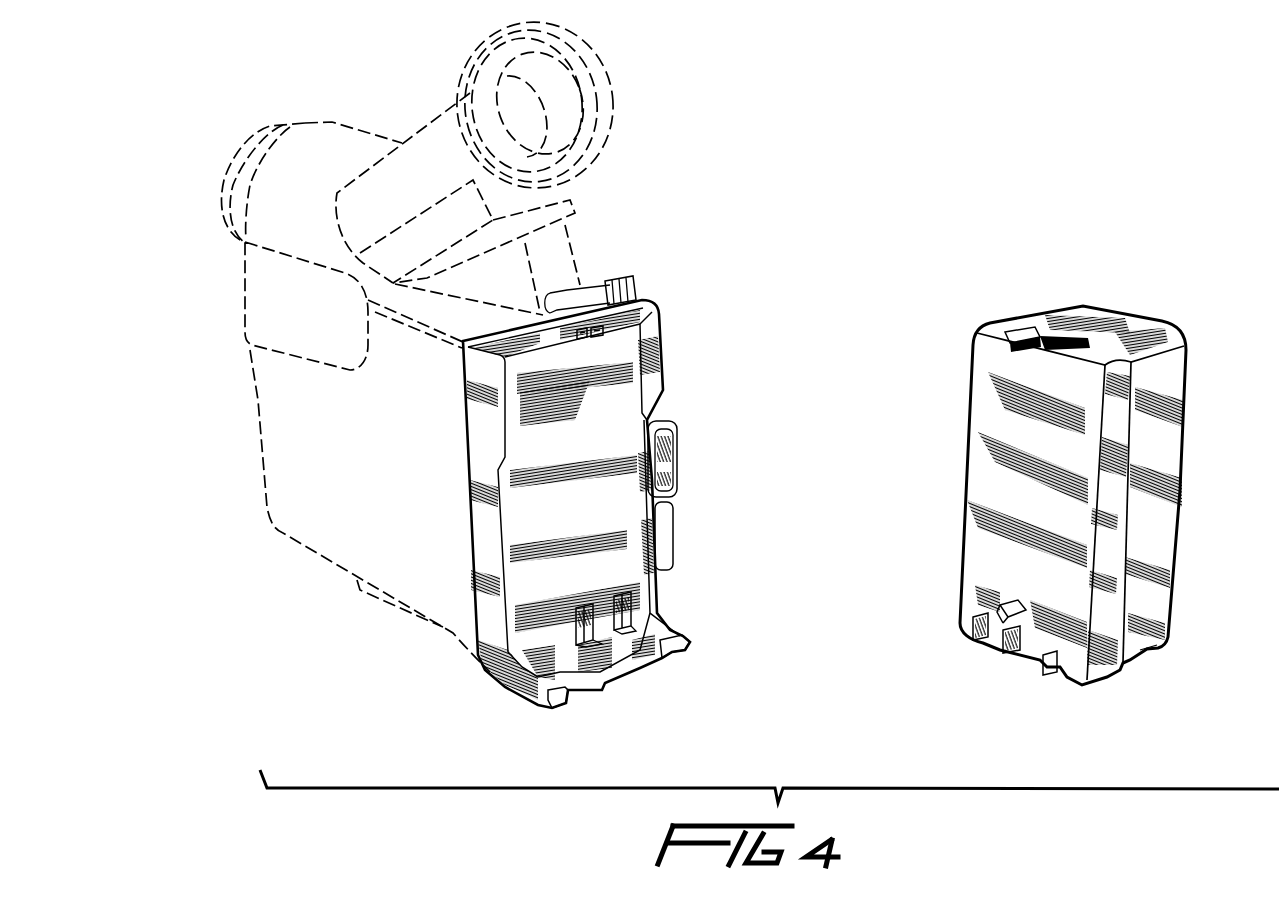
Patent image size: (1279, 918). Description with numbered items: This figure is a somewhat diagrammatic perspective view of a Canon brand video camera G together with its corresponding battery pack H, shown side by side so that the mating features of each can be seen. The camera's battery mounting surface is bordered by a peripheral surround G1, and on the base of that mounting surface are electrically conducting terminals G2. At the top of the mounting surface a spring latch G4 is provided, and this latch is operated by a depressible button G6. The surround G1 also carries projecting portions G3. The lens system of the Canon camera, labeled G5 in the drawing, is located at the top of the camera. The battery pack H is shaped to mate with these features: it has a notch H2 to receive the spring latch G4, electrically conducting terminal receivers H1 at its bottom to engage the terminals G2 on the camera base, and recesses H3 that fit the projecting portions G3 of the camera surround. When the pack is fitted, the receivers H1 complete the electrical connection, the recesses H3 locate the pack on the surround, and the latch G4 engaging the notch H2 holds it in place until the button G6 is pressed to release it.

The video camera G is at (313, 527).
The peripheral surround G1 is at (663, 378).
The electrically conducting terminals G2 is at (617, 597).
The projecting portions G3 is at (667, 607).
The spring latch G4 is at (600, 340).
The lens G5 is at (593, 104).
The depressible button G6 is at (615, 290).
The battery pack H is at (1173, 433).
The electrically conducting terminal receivers H1 is at (980, 643).
The notch H2 is at (1027, 333).
The recesses H3 is at (1220, 680).